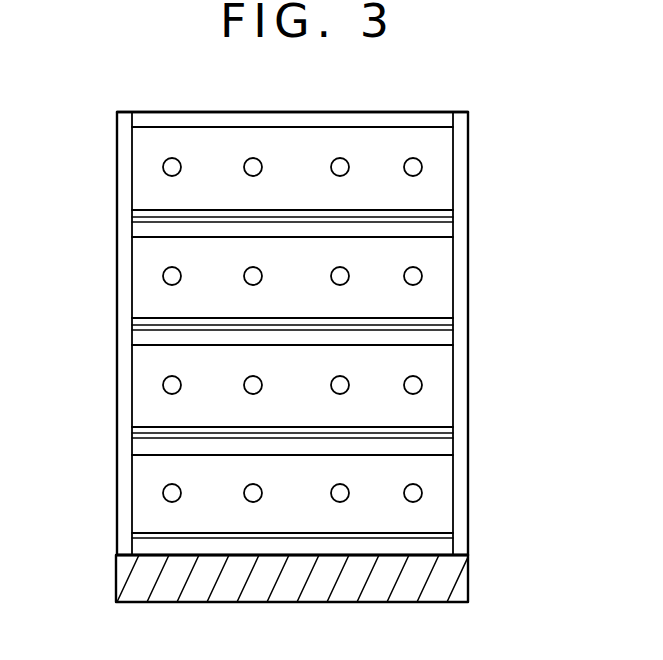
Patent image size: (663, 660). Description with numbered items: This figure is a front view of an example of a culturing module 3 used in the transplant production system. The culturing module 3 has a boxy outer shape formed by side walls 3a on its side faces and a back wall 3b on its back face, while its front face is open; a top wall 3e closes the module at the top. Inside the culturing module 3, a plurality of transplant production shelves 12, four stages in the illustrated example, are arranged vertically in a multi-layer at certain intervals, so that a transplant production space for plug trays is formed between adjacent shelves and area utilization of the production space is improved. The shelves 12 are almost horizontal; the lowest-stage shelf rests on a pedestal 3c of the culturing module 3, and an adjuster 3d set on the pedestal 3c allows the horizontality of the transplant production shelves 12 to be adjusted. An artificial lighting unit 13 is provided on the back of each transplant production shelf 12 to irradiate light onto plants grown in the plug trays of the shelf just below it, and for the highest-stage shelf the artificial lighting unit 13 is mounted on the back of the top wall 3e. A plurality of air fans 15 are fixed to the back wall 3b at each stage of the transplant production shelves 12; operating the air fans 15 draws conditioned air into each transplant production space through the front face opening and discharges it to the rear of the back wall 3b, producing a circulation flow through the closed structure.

The culturing module 3 is at (173, 105).
The side walls 3a is at (117, 249).
The back wall 3b is at (300, 157).
The pedestal 3c is at (450, 580).
The adjuster 3d is at (115, 556).
The top wall 3e is at (410, 112).
The transplant production shelves 12 is at (158, 204).
The artificial lighting unit 13 is at (428, 123).
The air fans 15 is at (253, 167).